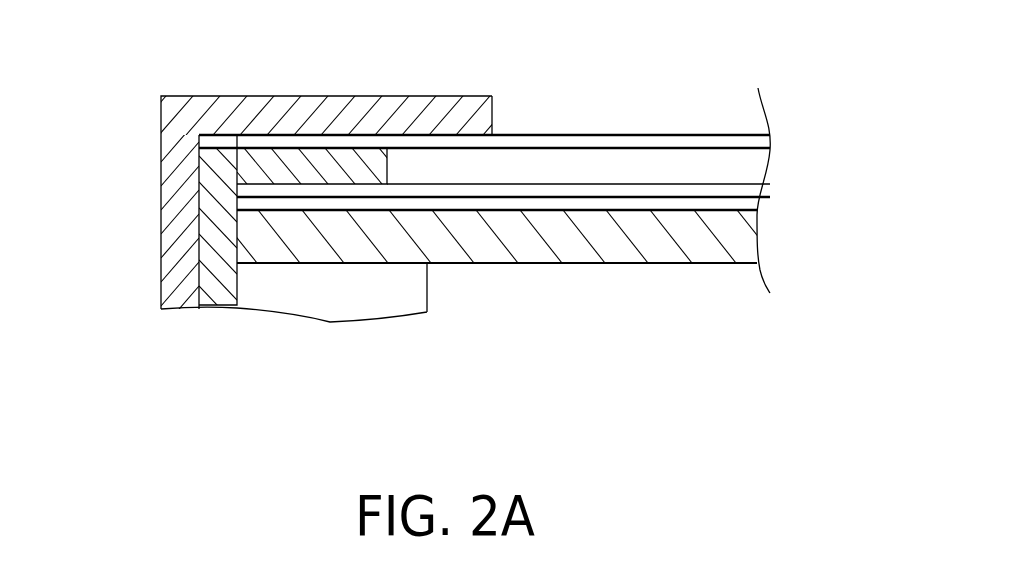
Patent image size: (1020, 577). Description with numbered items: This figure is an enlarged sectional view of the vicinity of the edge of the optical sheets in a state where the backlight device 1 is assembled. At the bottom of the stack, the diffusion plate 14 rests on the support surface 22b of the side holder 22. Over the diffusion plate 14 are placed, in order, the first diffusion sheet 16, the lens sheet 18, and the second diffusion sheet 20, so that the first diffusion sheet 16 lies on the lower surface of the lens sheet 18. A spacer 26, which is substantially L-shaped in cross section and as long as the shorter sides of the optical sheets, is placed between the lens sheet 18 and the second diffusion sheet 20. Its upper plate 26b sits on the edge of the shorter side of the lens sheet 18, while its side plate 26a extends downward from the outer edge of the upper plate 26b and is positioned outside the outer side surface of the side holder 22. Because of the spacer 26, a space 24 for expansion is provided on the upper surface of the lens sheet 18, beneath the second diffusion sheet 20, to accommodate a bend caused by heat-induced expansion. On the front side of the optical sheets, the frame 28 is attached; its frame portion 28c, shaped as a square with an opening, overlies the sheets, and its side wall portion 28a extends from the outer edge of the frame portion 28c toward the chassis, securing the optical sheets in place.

The backlight device 1 is at (838, 37).
The diffusion plate 14 is at (493, 263).
The first diffusion sheet 16 is at (572, 205).
The lens sheet 18 is at (628, 193).
The second diffusion sheet 20 is at (613, 137).
The side holder 22 is at (294, 332).
The support surface 22b is at (313, 262).
The space for expansion 24 is at (483, 168).
The spacer 26 is at (329, 208).
The side plate 26a is at (222, 278).
The upper plate 26b is at (315, 160).
The frame 28 is at (289, 174).
The side wall portion 28a is at (168, 227).
The frame portion 28c is at (227, 108).